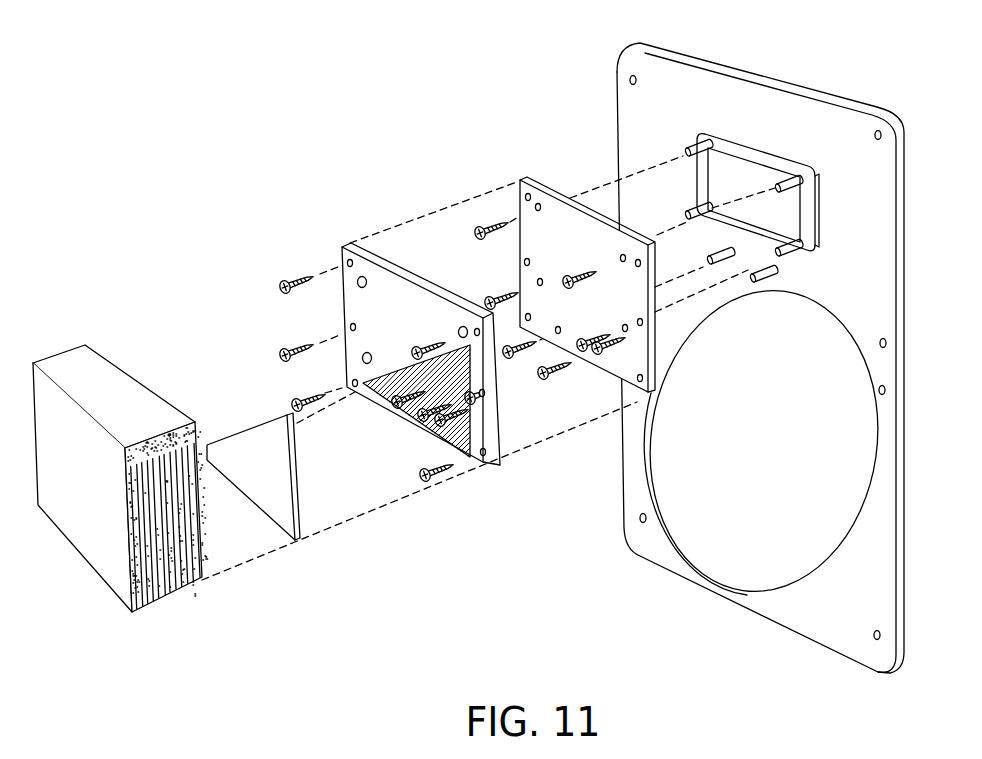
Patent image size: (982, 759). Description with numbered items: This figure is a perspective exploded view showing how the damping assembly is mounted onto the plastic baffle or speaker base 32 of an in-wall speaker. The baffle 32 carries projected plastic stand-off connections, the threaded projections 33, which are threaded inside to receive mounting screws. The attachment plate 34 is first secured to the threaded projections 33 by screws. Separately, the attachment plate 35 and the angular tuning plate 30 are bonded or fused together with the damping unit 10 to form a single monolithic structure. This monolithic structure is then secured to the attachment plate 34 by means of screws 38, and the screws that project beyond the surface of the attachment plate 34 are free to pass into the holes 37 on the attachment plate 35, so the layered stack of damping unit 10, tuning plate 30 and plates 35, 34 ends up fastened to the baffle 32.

The damping unit 10 is at (190, 614).
The angular tuning plate 30 is at (300, 478).
The plastic baffle or speaker base 32 is at (835, 92).
The threaded projections 33 is at (690, 150).
The attachment plate 34 is at (547, 182).
The attachment plate 35 is at (476, 228).
The holes 37 is at (370, 352).
The screws 38 is at (279, 287).